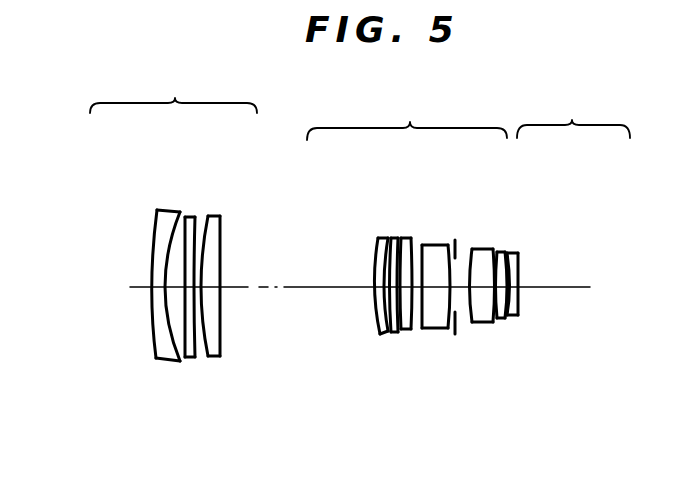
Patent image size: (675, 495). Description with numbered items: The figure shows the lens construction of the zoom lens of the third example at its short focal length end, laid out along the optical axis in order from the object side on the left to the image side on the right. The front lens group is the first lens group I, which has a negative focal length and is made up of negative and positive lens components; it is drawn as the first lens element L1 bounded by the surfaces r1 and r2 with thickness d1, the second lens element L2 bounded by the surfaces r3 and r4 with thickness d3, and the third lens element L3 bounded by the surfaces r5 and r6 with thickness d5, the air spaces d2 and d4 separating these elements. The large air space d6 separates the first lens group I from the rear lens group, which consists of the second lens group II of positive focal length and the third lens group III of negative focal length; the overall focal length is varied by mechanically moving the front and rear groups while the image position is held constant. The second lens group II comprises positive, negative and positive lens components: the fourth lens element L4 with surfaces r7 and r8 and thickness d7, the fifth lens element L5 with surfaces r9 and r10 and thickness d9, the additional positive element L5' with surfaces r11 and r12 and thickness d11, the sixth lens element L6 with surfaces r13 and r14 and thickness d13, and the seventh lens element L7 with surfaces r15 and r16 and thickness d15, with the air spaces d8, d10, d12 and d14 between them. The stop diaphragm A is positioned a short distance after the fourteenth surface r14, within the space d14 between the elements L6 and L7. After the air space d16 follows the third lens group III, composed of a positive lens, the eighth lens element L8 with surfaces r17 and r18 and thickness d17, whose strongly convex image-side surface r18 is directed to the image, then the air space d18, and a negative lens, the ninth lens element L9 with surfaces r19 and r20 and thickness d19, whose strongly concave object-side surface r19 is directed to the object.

The first lens group I is at (181, 90).
The second lens group II is at (417, 115).
The third lens group III is at (580, 113).
The first lens element L1 is at (130, 258).
The second lens element L2 is at (165, 286).
The third lens element L3 is at (221, 303).
The fourth lens element L4 is at (346, 258).
The fifth lens element L5 is at (365, 284).
The fifth-prime lens element L5' is at (430, 315).
The sixth lens element L6 is at (469, 315).
The seventh lens element L7 is at (513, 315).
The eighth lens element L8 is at (554, 294).
The ninth lens element L9 is at (575, 294).
The stop diaphragm A is at (455, 242).
The radius of curvature of the first surface r1 is at (157, 236).
The radius of curvature of the second surface r2 is at (173, 232).
The radius of curvature of the third surface r3 is at (185, 230).
The radius of curvature of the fourth surface r4 is at (195, 222).
The radius of curvature of the fifth surface r5 is at (209, 218).
The radius of curvature of the sixth surface r6 is at (220, 219).
The radius of curvature of the seventh surface r7 is at (374, 258).
The radius of curvature of the eighth surface r8 is at (386, 243).
The radius of curvature of the ninth surface r9 is at (392, 245).
The radius of curvature of the tenth surface r10 is at (398, 243).
The radius of curvature of the eleventh surface r11 is at (403, 242).
The radius of curvature of the twelfth surface r12 is at (411, 243).
The radius of curvature of the thirteenth surface r13 is at (425, 248).
The radius of curvature of the fourteenth surface r14 is at (448, 248).
The radius of curvature of the fifteenth surface r15 is at (474, 252).
The radius of curvature of the sixteenth surface r16 is at (493, 252).
The radius of curvature of the seventeenth surface r17 is at (498, 255).
The radius of curvature of the eighteenth surface r18 is at (505, 255).
The radius of curvature of the nineteenth surface r19 is at (510, 262).
The radius of curvature of the twentieth surface r20 is at (519, 268).
The lens thickness with respect to the first surface d1 is at (163, 290).
The space with respect to the second surface d2 is at (183, 300).
The lens thickness with respect to the third surface d3 is at (185, 352).
The space with respect to the fourth surface d4 is at (198, 356).
The lens thickness with respect to the fifth surface d5 is at (221, 352).
The space with respect to the sixth surface d6 is at (258, 288).
The lens thickness with respect to the seventh surface d7 is at (376, 290).
The space with respect to the eighth surface d8 is at (389, 333).
The lens thickness with respect to the ninth surface d9 is at (397, 333).
The space with respect to the tenth surface d10 is at (403, 333).
The lens thickness with respect to the eleventh surface d11 is at (407, 330).
The space with respect to the twelfth surface d12 is at (413, 328).
The lens thickness with respect to the thirteenth surface d13 is at (436, 330).
The space with respect to the fourteenth surface d14 is at (456, 336).
The lens thickness with respect to the fifteenth surface d15 is at (479, 324).
The space with respect to the sixteenth surface d16 is at (495, 320).
The lens thickness with respect to the seventeenth surface d17 is at (501, 320).
The space with respect to the eighteenth surface d18 is at (514, 318).
The lens thickness with respect to the nineteenth surface d19 is at (513, 290).